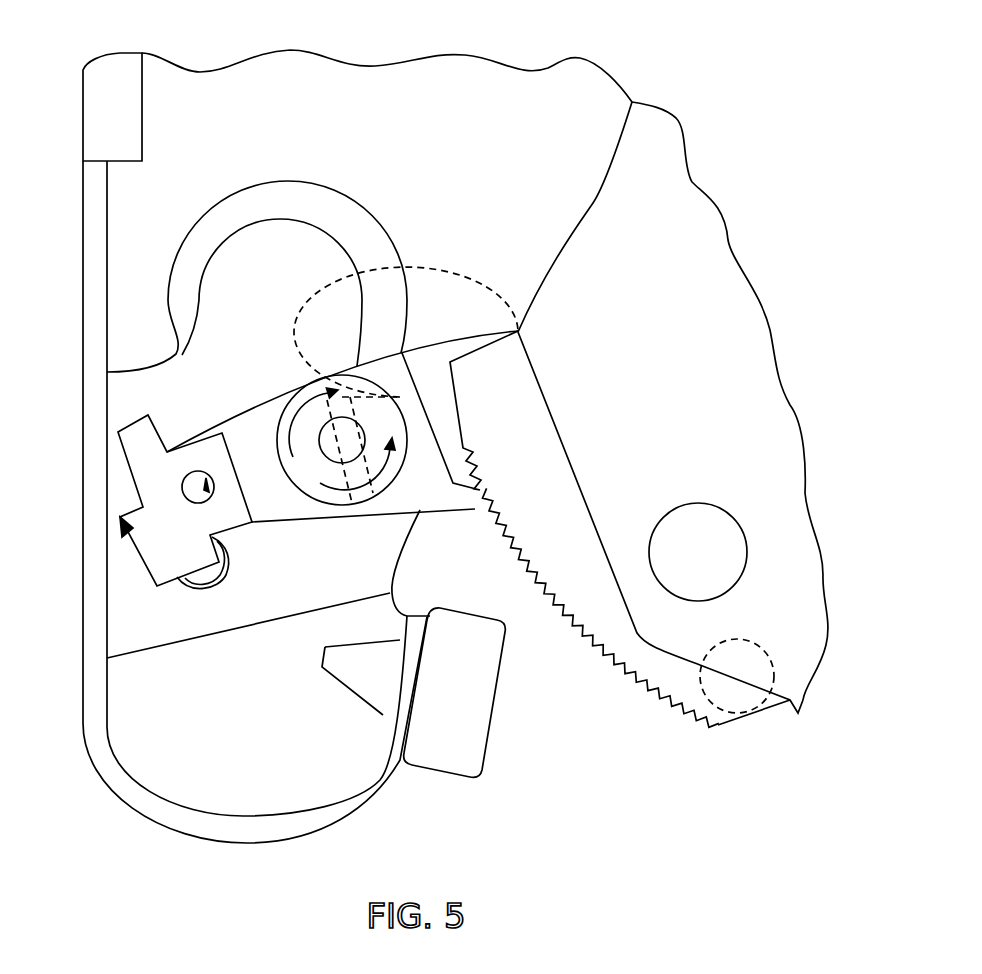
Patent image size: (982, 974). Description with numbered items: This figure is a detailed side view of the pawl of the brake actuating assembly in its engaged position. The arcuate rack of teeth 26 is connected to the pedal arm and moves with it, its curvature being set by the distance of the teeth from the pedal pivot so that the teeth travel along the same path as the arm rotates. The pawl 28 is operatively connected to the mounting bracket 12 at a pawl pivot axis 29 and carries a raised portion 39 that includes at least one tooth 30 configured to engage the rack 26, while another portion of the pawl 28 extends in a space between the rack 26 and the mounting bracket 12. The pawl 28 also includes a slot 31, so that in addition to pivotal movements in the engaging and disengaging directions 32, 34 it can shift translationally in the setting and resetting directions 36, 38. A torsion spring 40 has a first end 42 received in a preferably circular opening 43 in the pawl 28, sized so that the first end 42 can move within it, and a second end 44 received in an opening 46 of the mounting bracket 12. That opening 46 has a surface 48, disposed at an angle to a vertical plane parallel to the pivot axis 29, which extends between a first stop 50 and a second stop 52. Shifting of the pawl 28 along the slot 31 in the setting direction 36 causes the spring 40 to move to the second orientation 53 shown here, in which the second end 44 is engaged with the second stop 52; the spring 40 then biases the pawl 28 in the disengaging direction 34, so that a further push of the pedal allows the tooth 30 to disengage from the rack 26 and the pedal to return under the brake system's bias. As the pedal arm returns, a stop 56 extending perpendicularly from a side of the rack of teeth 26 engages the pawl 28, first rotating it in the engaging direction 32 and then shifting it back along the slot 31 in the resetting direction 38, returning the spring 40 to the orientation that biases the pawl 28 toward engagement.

The mounting bracket 12 is at (208, 827).
The rack of teeth 26 is at (643, 682).
The pawl 28 is at (162, 580).
The pawl pivot axis 29 is at (347, 427).
The tooth 30 is at (463, 507).
The slot 31 is at (453, 392).
The engaging direction 32 is at (355, 480).
The disengaging direction 34 is at (283, 410).
The setting direction 36 is at (233, 283).
The resetting direction 38 is at (275, 378).
The raised portion 39 is at (412, 499).
The spring 40 is at (234, 567).
The first end 42 is at (205, 470).
The opening 43 is at (186, 470).
The second end 44 is at (120, 543).
The opening 46 is at (118, 532).
The surface 48 is at (120, 528).
The first stop 50 is at (120, 519).
The second stop 52 is at (124, 537).
The second orientation 53 is at (224, 611).
The stop 56 is at (747, 697).